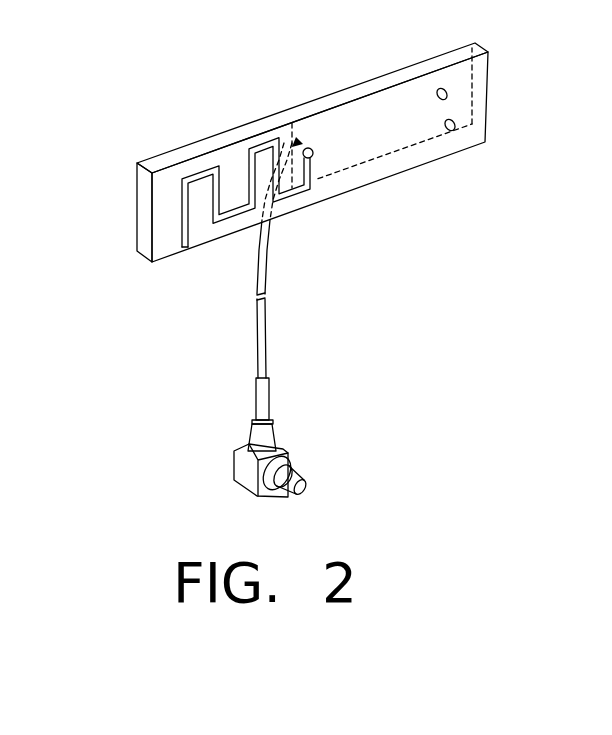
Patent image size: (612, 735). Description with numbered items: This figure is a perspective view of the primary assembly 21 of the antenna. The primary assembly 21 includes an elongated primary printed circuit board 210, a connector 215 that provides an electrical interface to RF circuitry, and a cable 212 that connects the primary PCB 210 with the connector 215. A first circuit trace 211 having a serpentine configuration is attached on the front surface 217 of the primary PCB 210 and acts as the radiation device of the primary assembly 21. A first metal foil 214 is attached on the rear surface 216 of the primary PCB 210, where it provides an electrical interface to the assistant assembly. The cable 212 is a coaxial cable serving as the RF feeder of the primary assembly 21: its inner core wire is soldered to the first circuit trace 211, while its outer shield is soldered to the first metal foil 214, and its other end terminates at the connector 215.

The primary assembly 21 is at (263, 97).
The primary printed circuit board 210 is at (412, 132).
The first circuit trace 211 is at (200, 170).
The cable 212 is at (270, 257).
The first metal foil 214 is at (378, 70).
The connector 215 is at (248, 473).
The rear surface 216 is at (128, 211).
The front surface 217 is at (162, 240).